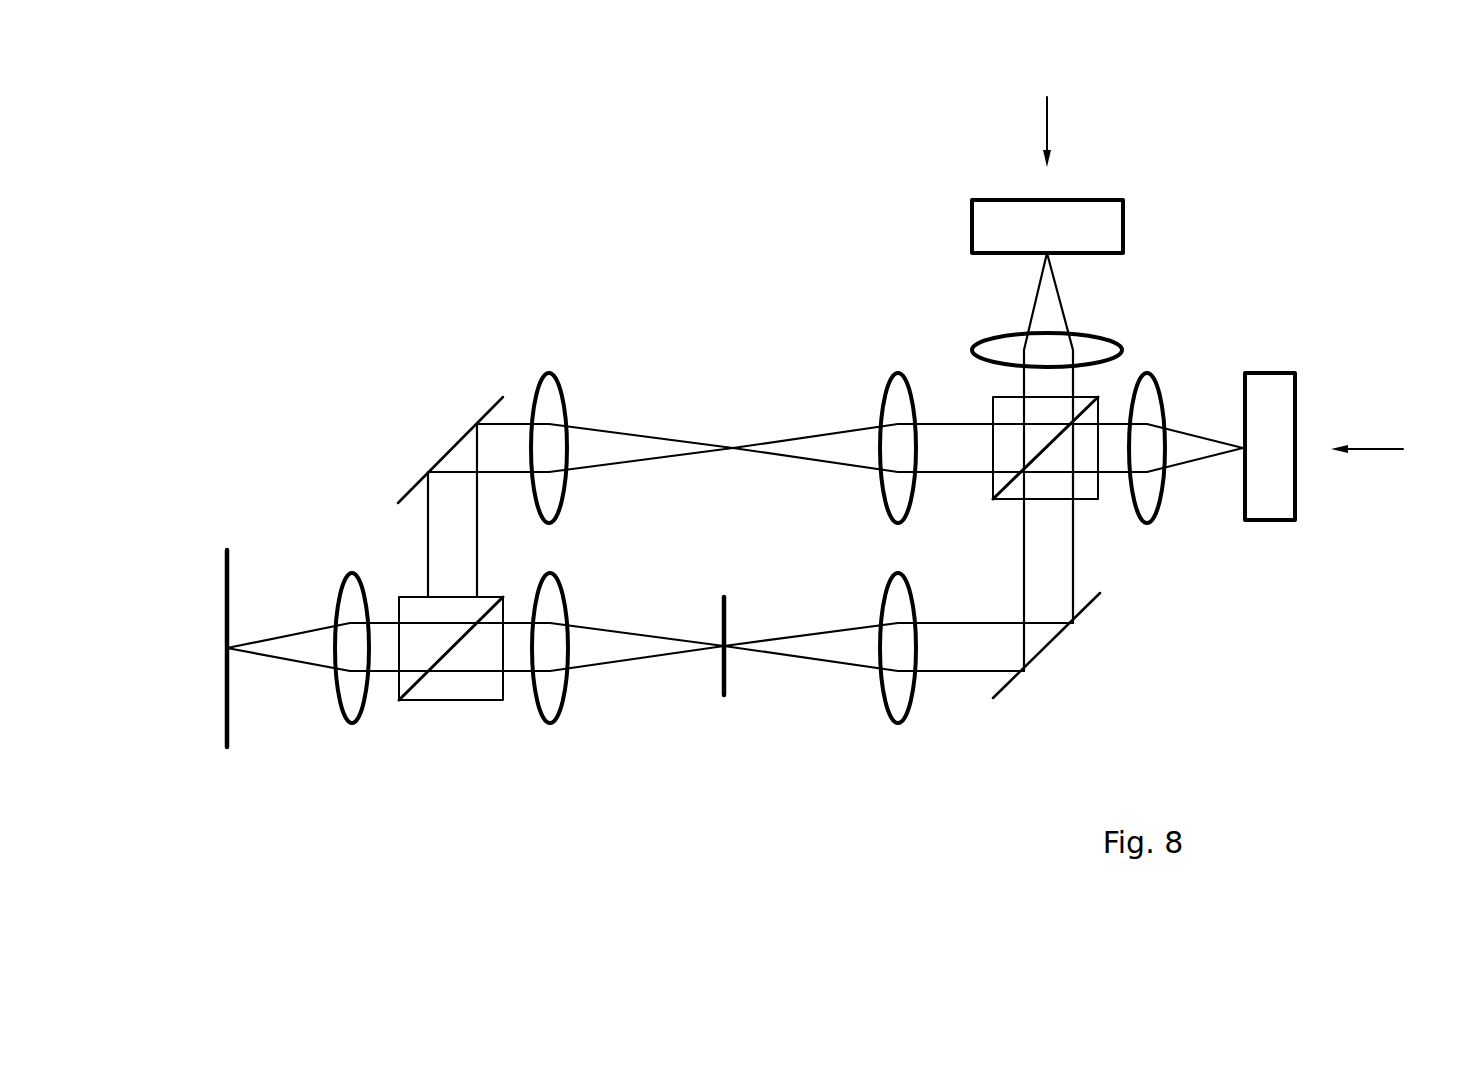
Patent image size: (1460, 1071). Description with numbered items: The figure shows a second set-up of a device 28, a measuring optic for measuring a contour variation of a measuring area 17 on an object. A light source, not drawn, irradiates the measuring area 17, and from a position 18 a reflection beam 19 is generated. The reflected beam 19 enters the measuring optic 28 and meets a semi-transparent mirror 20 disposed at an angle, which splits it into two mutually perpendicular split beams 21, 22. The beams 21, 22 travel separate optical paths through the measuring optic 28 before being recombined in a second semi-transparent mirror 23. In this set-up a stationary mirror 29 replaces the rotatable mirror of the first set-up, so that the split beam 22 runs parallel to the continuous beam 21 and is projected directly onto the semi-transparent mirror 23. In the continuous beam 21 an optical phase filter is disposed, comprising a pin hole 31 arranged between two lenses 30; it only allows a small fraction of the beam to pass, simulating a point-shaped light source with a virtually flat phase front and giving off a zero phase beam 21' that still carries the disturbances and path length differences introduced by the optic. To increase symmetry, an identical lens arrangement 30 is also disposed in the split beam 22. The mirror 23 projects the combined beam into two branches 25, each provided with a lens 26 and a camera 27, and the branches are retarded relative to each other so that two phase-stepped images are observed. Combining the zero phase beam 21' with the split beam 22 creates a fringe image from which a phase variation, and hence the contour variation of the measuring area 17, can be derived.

The measuring area 17 is at (225, 600).
The position 18 is at (227, 648).
The reflection beam 19 is at (295, 650).
The semi-transparent mirror 20 is at (452, 700).
The split beam 21 is at (637, 696).
The zero phase beam 21' is at (811, 696).
The split beam 22 is at (612, 450).
The second semi-transparent mirror 23 is at (1098, 499).
The branches 25 is at (1237, 265).
The lens 26 is at (1147, 522).
The camera 27 is at (1272, 520).
The measuring optic 28 is at (1253, 650).
The stationary mirror 29 is at (437, 462).
The lenses 30 is at (548, 375).
The pin hole 31 is at (750, 694).